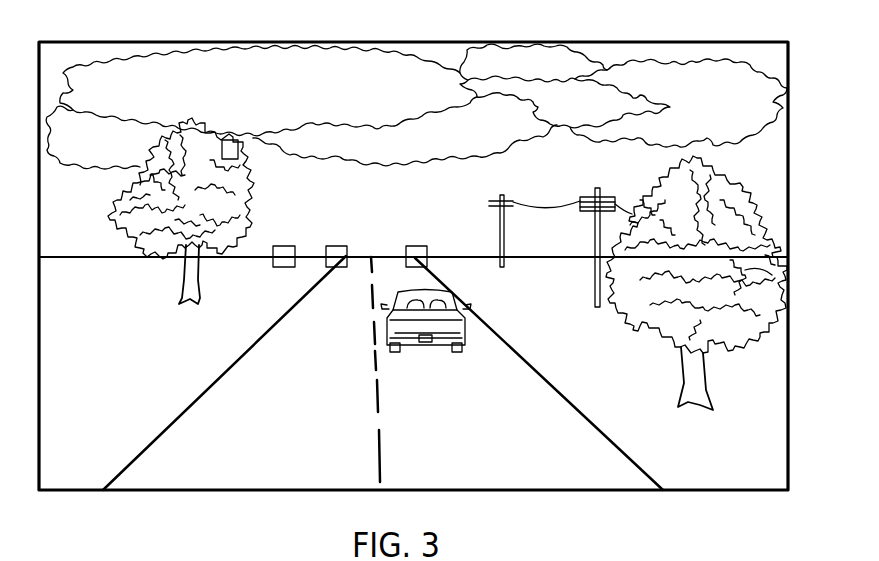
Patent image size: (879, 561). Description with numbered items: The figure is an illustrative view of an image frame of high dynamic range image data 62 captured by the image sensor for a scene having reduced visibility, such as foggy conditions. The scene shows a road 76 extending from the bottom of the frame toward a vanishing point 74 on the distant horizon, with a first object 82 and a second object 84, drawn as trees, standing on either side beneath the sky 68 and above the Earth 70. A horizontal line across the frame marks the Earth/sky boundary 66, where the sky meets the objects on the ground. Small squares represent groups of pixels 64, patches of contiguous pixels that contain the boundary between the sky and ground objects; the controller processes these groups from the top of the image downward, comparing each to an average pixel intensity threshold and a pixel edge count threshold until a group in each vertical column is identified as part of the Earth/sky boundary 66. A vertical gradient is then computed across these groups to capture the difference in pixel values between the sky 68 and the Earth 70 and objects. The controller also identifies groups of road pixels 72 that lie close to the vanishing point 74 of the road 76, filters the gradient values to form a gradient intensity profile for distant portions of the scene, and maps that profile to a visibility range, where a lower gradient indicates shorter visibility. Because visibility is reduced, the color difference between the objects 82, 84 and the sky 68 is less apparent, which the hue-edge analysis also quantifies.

The high dynamic range image data 62 is at (700, 50).
The groups of pixels 64 is at (240, 150).
The Earth/sky boundary 66 is at (314, 249).
The sky 68 is at (719, 268).
The Earth 70 is at (761, 399).
The groups of road pixels 72 is at (340, 246).
The vanishing point 74 is at (364, 266).
The road 76 is at (522, 378).
The first object 82 is at (770, 275).
The second object 84 is at (110, 213).